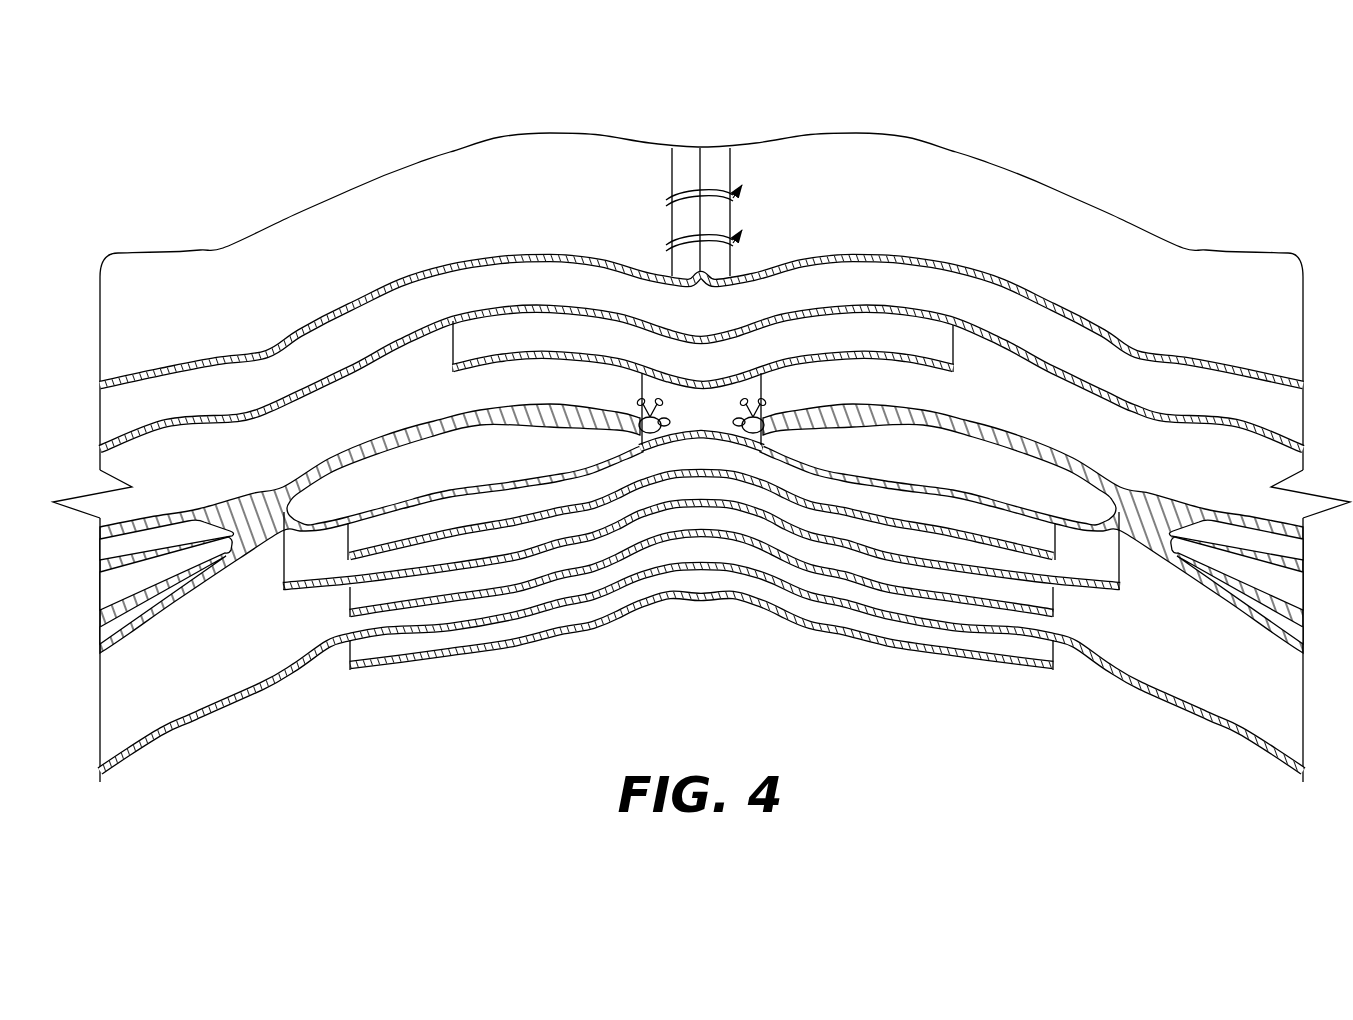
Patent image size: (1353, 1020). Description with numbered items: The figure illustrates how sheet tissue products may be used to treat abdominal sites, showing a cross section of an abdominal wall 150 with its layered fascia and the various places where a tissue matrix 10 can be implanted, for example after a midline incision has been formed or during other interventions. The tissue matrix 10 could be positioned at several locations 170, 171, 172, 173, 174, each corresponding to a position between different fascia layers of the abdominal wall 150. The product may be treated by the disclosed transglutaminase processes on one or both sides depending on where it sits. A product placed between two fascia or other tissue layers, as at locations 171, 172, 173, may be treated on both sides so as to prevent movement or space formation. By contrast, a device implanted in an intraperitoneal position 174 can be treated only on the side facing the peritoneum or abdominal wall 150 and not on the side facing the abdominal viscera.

The abdominal wall 150 is at (701, 416).
The location 170 is at (510, 332).
The tissue matrix 10 is at (701, 411).
The location 171 is at (710, 417).
The location 172 is at (1008, 545).
The location 173 is at (957, 627).
The intraperitoneal position 174 is at (873, 643).